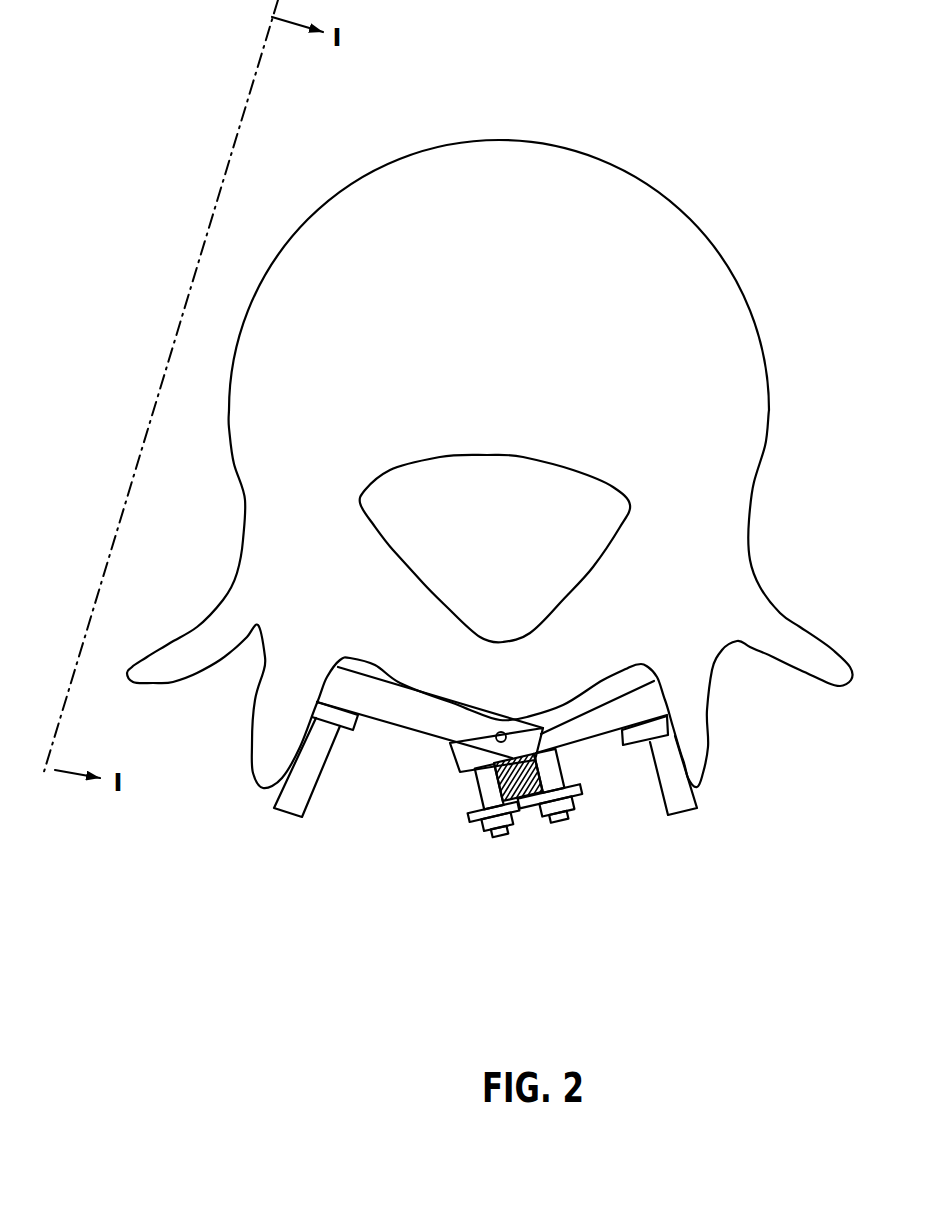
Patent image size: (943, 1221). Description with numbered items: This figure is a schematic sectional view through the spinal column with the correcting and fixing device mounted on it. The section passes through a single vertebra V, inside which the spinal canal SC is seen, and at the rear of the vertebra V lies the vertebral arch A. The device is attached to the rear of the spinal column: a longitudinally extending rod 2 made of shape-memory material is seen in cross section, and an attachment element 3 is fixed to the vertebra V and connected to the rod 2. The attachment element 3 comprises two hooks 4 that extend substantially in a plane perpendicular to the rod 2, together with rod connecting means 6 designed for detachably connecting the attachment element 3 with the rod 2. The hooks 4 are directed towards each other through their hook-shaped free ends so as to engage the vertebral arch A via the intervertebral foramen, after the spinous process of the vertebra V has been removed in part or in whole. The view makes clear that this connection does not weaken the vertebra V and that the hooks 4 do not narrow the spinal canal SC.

The rod 2 is at (508, 840).
The attachment element 3 is at (430, 855).
The hooks 4 is at (290, 802).
The rod connecting means 6 is at (548, 843).
The vertebra V is at (692, 152).
The spinal canal SC is at (478, 565).
The vertebral arch A is at (492, 694).